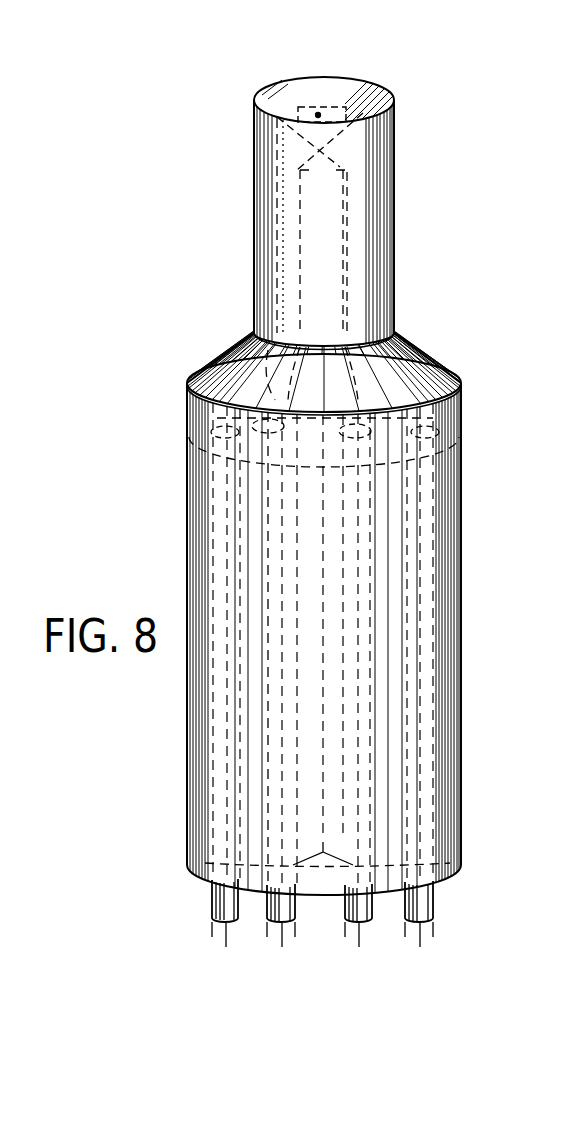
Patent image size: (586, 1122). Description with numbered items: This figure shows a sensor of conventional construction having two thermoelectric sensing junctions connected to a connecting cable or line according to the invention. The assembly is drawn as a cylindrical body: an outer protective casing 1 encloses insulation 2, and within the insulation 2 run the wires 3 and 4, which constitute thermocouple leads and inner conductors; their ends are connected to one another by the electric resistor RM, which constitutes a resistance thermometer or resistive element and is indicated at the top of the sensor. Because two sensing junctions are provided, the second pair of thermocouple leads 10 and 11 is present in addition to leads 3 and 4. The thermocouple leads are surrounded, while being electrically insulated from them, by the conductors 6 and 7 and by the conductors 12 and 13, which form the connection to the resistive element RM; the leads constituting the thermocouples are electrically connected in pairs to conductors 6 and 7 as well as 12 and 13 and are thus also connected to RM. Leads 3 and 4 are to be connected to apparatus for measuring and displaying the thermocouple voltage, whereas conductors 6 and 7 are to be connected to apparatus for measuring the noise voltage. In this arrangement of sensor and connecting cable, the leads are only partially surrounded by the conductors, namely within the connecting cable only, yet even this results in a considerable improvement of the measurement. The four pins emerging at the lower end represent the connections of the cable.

The outer protective casing 1 is at (392, 170).
The insulation 2 is at (392, 303).
The wire 3 is at (228, 390).
The wire 4 is at (345, 253).
The conductor 6 is at (281, 157).
The conductor 7 is at (335, 470).
The lead 10 is at (290, 377).
The lead 11 is at (366, 155).
The conductor 12 is at (303, 235).
The conductor 13 is at (455, 452).
The electric resistor RM is at (318, 113).